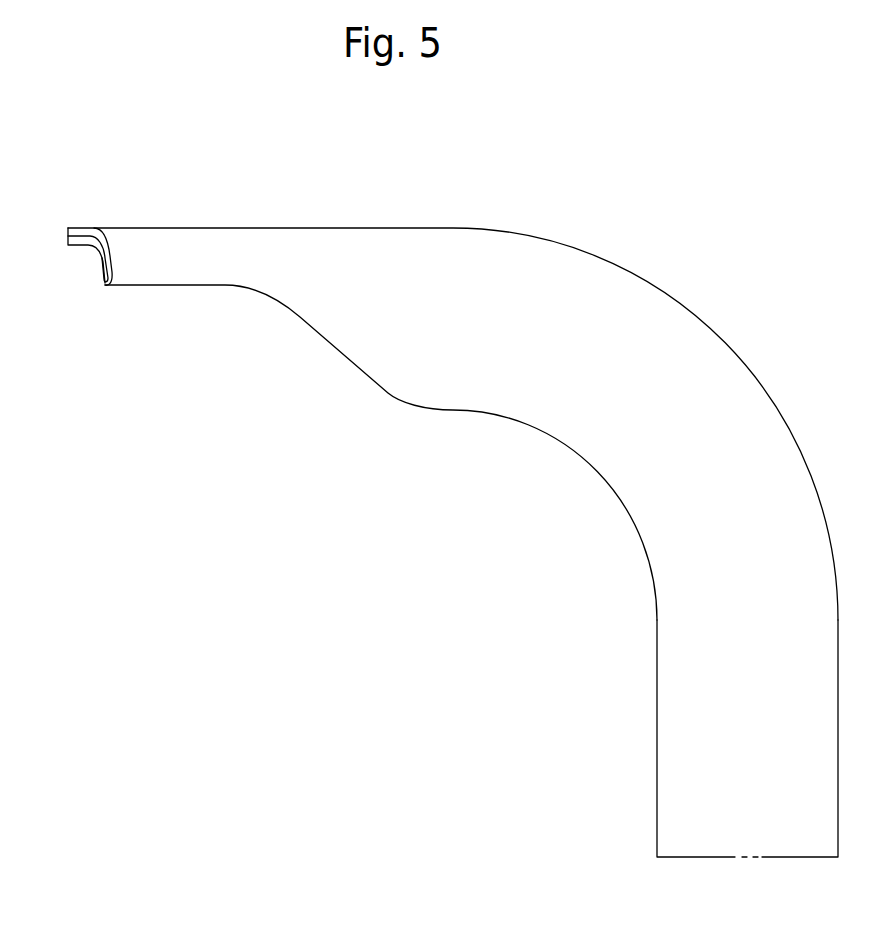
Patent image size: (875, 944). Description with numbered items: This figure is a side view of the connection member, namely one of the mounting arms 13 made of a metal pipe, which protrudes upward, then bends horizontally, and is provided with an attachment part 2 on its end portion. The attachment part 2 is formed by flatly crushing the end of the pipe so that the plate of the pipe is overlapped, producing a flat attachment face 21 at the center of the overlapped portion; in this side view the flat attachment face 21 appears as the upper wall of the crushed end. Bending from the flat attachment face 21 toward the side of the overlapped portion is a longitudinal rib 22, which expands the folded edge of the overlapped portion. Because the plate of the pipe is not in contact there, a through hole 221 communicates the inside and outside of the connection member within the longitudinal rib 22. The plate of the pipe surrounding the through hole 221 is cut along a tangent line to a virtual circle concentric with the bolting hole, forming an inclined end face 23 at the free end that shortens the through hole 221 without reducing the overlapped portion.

The attachment part 2 is at (210, 246).
The flat attachment face 21 is at (157, 228).
The longitudinal rib 22 is at (140, 284).
The inclined end face 23 is at (83, 228).
The through hole 221 is at (103, 268).
The mounting arm 13 is at (662, 721).